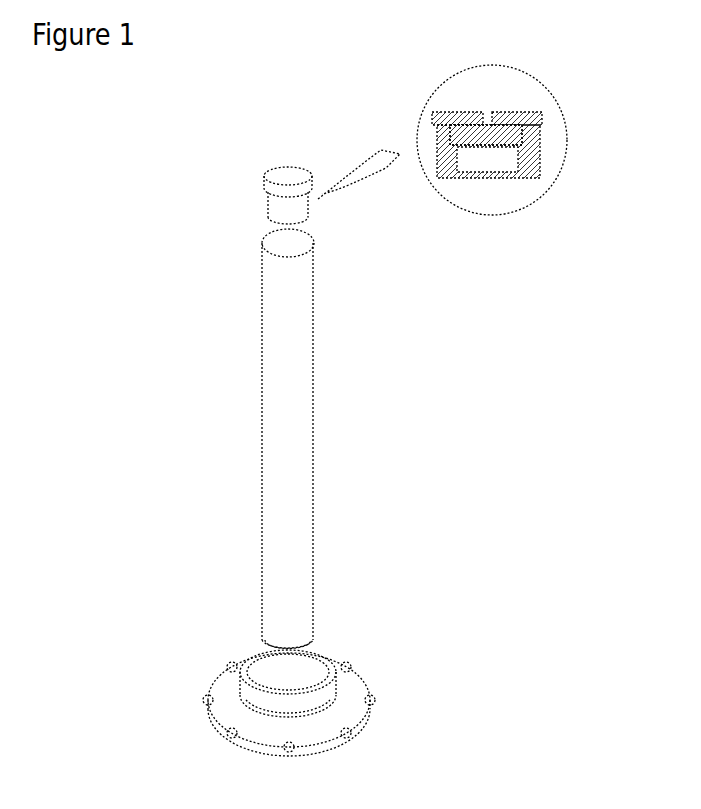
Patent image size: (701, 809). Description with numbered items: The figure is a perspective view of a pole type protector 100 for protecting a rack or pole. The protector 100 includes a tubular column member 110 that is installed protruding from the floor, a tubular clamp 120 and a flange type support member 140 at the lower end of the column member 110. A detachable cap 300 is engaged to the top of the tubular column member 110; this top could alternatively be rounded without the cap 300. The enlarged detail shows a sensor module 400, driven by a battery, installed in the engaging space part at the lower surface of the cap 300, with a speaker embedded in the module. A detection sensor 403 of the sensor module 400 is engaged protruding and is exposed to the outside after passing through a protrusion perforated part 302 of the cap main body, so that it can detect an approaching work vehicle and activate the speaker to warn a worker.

The pole type protector 100 is at (210, 315).
The tubular column member 110 is at (335, 368).
The tubular clamp 120 is at (313, 672).
The flange type support member 140 is at (328, 695).
The cap 300 is at (528, 102).
The protrusion perforated part 302 is at (263, 173).
The detection sensor 403 is at (236, 181).
The sensor module 400 is at (487, 160).